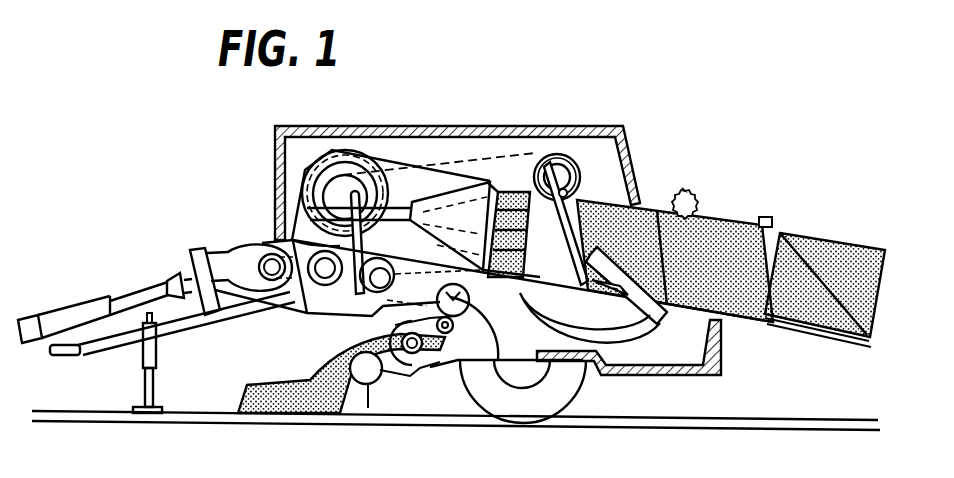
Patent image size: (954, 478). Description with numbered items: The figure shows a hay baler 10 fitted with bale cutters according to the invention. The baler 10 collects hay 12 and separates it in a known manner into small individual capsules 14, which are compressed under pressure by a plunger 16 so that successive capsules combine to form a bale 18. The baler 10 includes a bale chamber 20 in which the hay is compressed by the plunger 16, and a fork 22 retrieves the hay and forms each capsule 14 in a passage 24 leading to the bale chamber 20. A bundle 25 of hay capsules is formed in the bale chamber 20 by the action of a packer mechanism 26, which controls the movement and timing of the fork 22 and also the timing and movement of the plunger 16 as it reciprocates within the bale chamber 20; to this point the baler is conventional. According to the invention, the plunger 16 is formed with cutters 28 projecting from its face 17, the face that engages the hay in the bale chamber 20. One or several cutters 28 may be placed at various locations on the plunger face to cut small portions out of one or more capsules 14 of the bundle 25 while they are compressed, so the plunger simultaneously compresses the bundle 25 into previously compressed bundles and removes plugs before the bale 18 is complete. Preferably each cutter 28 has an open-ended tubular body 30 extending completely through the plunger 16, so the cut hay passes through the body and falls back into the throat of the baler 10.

The baler 10 is at (565, 101).
The hay 12 is at (279, 354).
The capsules 14 is at (449, 366).
The plunger 16 is at (430, 191).
The face 17 is at (511, 200).
The bale 18 is at (733, 221).
The bale chamber 20 is at (568, 192).
The fork 22 is at (522, 294).
The passage 24 is at (517, 290).
The bundle 25 is at (526, 251).
The packer mechanism 26 is at (308, 163).
The cutters 28 is at (524, 221).
The tubular body 30 is at (473, 192).